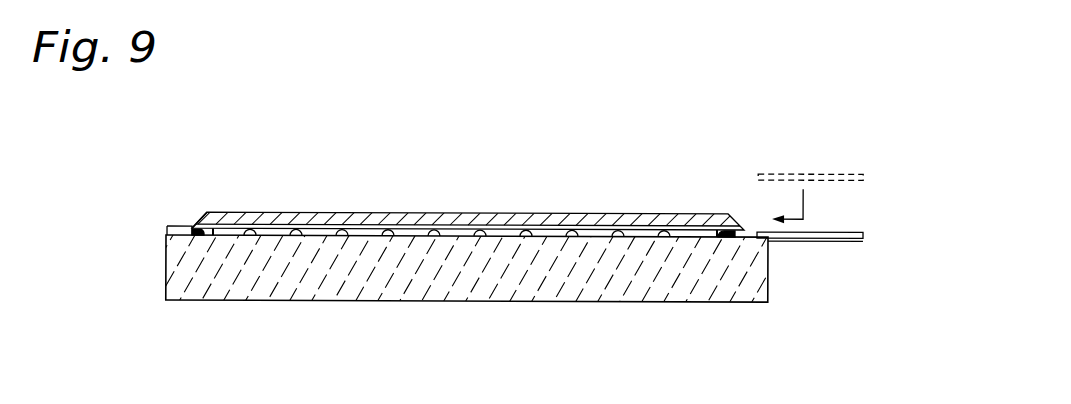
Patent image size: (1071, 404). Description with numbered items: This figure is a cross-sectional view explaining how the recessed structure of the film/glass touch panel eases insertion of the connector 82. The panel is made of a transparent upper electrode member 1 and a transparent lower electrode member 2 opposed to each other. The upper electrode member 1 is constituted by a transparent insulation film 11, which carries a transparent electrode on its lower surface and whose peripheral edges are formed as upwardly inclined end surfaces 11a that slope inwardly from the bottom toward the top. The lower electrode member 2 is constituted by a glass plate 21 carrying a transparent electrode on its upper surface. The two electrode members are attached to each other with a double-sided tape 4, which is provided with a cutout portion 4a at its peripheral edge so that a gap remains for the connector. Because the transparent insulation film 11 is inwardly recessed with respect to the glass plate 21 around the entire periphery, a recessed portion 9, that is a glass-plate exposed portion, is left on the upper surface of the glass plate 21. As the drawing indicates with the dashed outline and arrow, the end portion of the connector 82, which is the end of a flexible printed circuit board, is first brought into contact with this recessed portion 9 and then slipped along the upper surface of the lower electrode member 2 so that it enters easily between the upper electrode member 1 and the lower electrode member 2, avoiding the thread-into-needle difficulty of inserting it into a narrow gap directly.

The upper electrode member 1 is at (450, 166).
The lower electrode member 2 is at (462, 313).
The glass plate 21 is at (551, 272).
The double-sided tape 4 is at (197, 234).
The cutout portion 4a is at (737, 238).
The recessed portion (glass-plate exposed portion) 9 is at (180, 228).
The transparent insulation film 11 is at (543, 213).
The upwardly inclined end surface 11a is at (190, 212).
The connector 82 is at (810, 238).